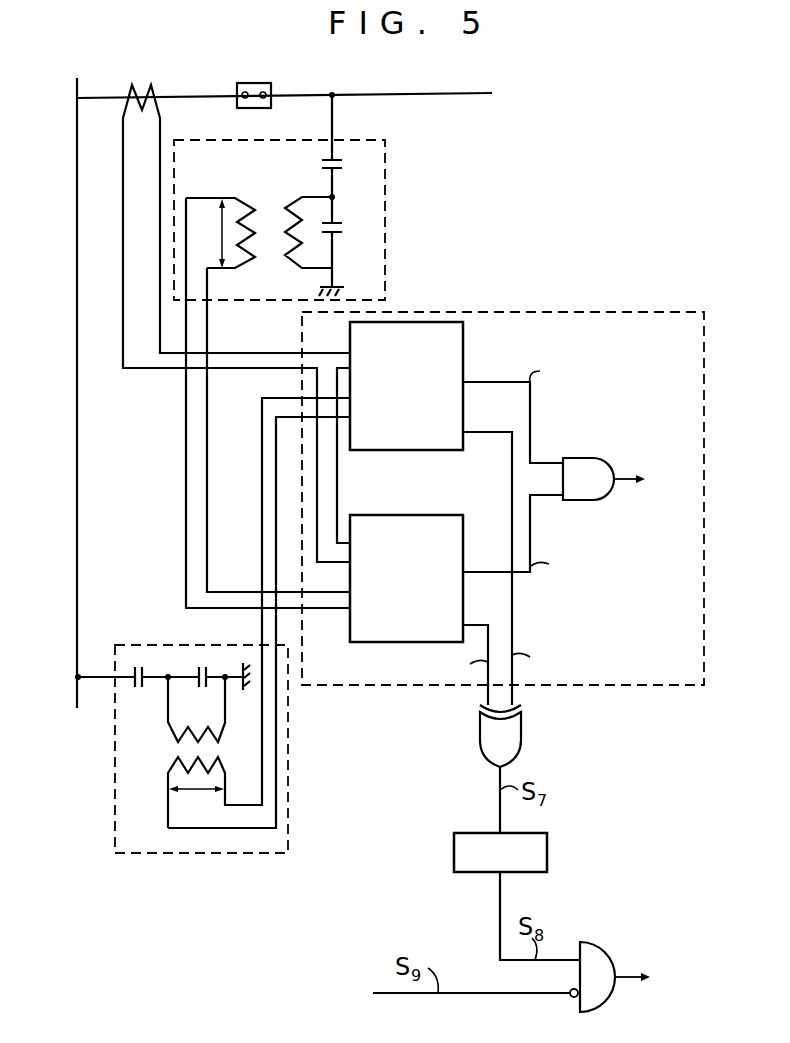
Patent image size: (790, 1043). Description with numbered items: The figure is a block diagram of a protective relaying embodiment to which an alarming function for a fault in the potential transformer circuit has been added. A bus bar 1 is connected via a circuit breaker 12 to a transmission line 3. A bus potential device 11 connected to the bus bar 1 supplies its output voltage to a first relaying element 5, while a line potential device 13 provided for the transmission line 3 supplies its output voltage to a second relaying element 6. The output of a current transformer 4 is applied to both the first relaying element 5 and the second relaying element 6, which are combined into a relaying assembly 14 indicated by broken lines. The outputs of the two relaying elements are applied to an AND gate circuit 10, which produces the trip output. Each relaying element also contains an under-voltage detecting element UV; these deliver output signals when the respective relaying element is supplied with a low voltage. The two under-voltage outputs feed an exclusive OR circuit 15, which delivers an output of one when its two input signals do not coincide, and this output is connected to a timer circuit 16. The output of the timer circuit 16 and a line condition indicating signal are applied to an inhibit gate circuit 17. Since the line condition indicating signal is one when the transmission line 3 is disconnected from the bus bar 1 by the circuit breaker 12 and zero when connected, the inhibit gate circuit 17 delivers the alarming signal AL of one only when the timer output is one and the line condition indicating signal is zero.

The bus bar 1 is at (78, 437).
The transmission line 3 is at (457, 93).
The current transformer 4 is at (152, 92).
The first relaying element 5 is at (464, 333).
The second relaying element 6 is at (464, 527).
The AND gate circuit 10 is at (585, 458).
The bus potential device 11 is at (289, 773).
The circuit breaker 12 is at (255, 83).
The line potential device 13 is at (385, 157).
The relaying assembly 14 is at (580, 311).
The exclusive OR circuit 15 is at (522, 726).
The timer circuit 16 is at (547, 848).
The inhibit gate circuit 17 is at (605, 932).